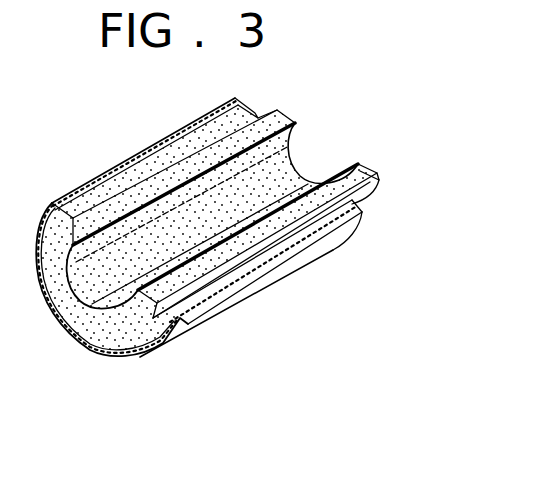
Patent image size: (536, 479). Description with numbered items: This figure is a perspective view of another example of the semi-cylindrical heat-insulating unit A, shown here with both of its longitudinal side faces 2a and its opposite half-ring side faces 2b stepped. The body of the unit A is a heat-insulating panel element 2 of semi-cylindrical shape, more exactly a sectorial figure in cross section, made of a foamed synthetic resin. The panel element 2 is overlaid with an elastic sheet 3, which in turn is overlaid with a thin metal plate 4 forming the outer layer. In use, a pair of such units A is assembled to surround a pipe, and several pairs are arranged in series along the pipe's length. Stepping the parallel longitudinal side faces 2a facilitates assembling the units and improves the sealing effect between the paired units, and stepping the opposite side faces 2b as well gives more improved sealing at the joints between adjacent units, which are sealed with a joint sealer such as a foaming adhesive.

The heat-insulating unit A is at (73, 188).
The heat-insulating panel element 2 is at (296, 158).
The longitudinal side faces 2a is at (303, 206).
The opposite side faces 2b is at (103, 328).
The elastic sheet 3 is at (178, 143).
The thin metal plate 4 is at (253, 293).